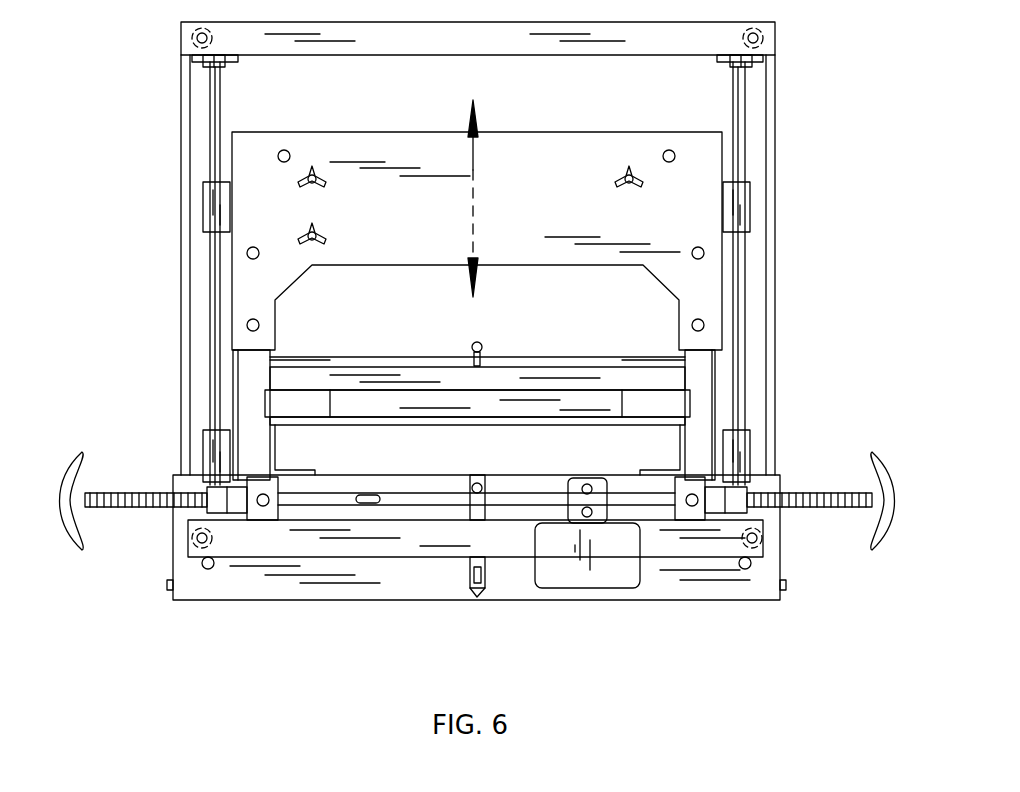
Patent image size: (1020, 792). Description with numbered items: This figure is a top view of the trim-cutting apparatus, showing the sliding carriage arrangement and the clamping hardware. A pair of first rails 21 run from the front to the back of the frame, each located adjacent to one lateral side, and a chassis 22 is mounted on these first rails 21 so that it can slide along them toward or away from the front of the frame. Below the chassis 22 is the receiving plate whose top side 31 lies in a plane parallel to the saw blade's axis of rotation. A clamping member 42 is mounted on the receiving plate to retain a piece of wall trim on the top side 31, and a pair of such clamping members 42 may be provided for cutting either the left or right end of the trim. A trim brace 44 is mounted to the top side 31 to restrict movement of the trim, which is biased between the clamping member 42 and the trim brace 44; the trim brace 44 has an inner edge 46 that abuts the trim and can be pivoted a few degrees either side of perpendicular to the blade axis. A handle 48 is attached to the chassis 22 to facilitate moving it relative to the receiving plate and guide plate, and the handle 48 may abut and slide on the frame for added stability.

The first rails 21 is at (212, 99).
The chassis 22 is at (722, 132).
The top side 31 is at (293, 585).
The clamping member 42 is at (122, 505).
The trim brace 44 is at (470, 575).
The inner edge 46 is at (483, 503).
The handle 48 is at (603, 587).